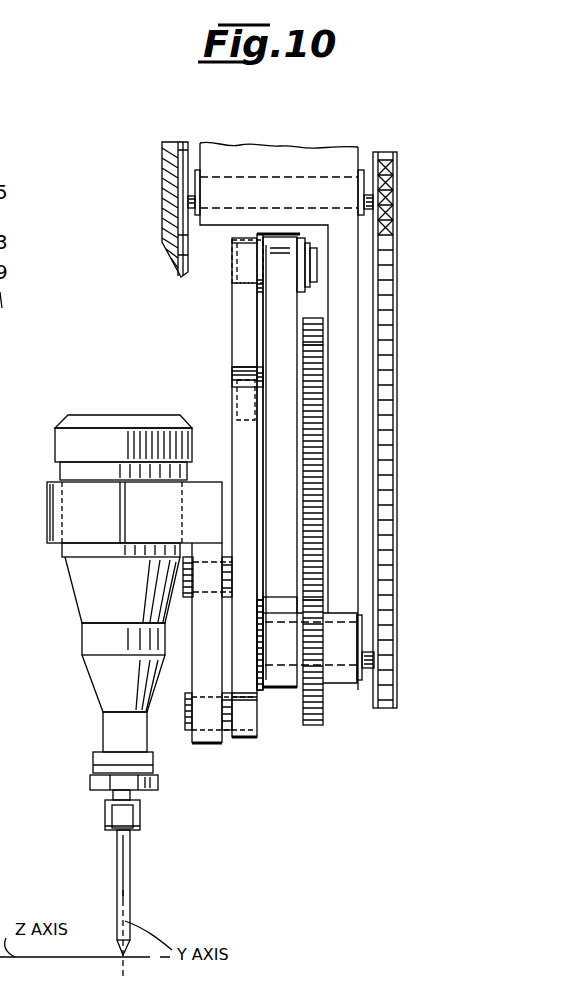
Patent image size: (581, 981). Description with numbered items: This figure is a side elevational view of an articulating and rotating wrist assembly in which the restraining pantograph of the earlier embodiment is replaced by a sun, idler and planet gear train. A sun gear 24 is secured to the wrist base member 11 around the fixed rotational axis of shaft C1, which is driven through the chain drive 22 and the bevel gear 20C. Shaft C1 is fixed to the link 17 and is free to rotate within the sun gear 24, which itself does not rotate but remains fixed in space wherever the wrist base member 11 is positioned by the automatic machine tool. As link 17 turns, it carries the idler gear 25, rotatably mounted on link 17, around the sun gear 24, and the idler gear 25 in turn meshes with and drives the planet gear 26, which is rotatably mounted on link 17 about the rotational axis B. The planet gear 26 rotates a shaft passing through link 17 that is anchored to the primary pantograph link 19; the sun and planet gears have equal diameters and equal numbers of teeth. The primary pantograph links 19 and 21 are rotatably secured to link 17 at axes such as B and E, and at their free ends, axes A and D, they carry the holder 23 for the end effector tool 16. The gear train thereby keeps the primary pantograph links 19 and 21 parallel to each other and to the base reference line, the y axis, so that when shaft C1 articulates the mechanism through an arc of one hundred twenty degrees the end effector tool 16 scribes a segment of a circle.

The wrist base member 11 is at (258, 150).
The bevel gear 20C is at (162, 172).
The chain drive 22 is at (395, 375).
The primary pantograph link 21 is at (240, 323).
The link 17 is at (263, 348).
The primary pantograph link 19 is at (237, 441).
The planet gear 26 is at (313, 321).
The idler gear 25 is at (305, 481).
The sun gear 24 is at (312, 725).
The holder 23 is at (50, 502).
The end effector tool 16 is at (76, 579).
The axis A is at (185, 716).
The rotational axis B is at (231, 400).
The rotatable shaft C1 is at (262, 644).
The axis D is at (183, 580).
The rotational axis E is at (231, 263).